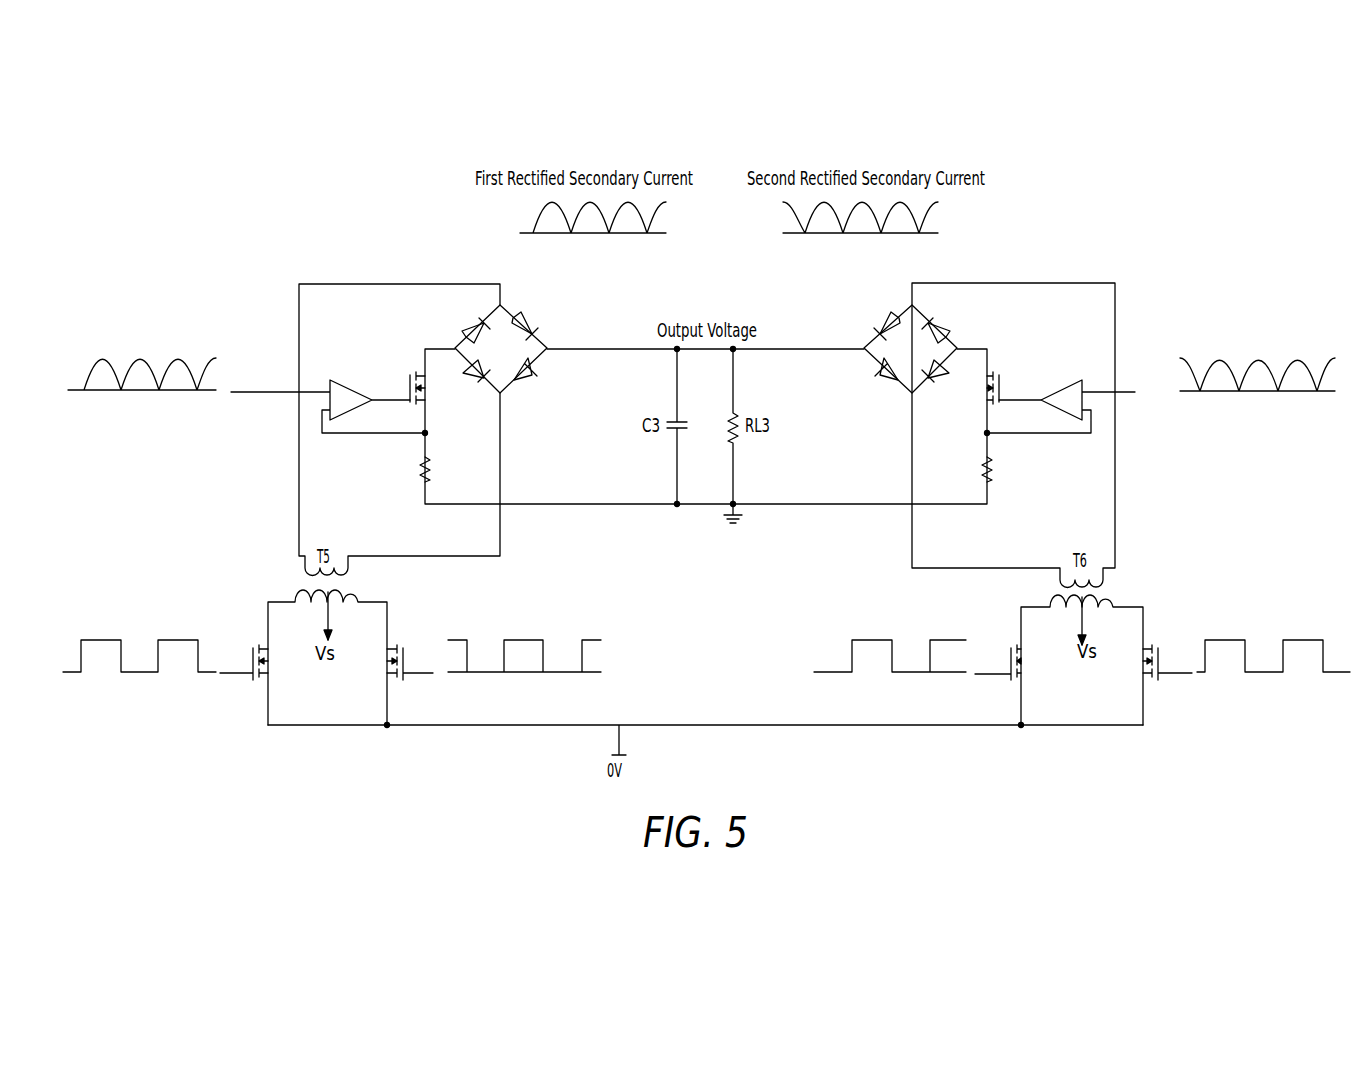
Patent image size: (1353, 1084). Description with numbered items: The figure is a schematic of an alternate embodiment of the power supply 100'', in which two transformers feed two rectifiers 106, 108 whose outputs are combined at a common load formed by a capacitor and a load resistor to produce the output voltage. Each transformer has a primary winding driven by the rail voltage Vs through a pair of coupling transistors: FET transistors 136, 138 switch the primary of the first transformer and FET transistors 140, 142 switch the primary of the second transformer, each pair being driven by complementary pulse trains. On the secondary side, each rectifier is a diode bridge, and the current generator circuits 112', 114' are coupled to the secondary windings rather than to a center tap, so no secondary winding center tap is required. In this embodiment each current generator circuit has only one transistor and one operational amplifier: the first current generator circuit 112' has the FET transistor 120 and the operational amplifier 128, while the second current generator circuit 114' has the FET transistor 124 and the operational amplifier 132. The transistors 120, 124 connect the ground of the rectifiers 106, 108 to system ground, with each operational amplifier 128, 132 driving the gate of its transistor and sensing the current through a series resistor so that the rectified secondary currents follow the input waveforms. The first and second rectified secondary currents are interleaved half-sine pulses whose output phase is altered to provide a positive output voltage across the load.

The power supply 100'' is at (1006, 786).
The rectifier 106 is at (543, 343).
The rectifier 108 is at (872, 342).
The current generator circuit 112' is at (390, 358).
The current generator circuit 114' is at (1022, 358).
The FET transistor 120 is at (356, 390).
The FET transistor 124 is at (1047, 388).
The operational amplifier 128 is at (423, 475).
The operational amplifier 132 is at (993, 463).
The FET transistor 136 is at (252, 662).
The FET transistor 138 is at (405, 660).
The FET transistor 140 is at (1003, 660).
The FET transistor 142 is at (1163, 660).